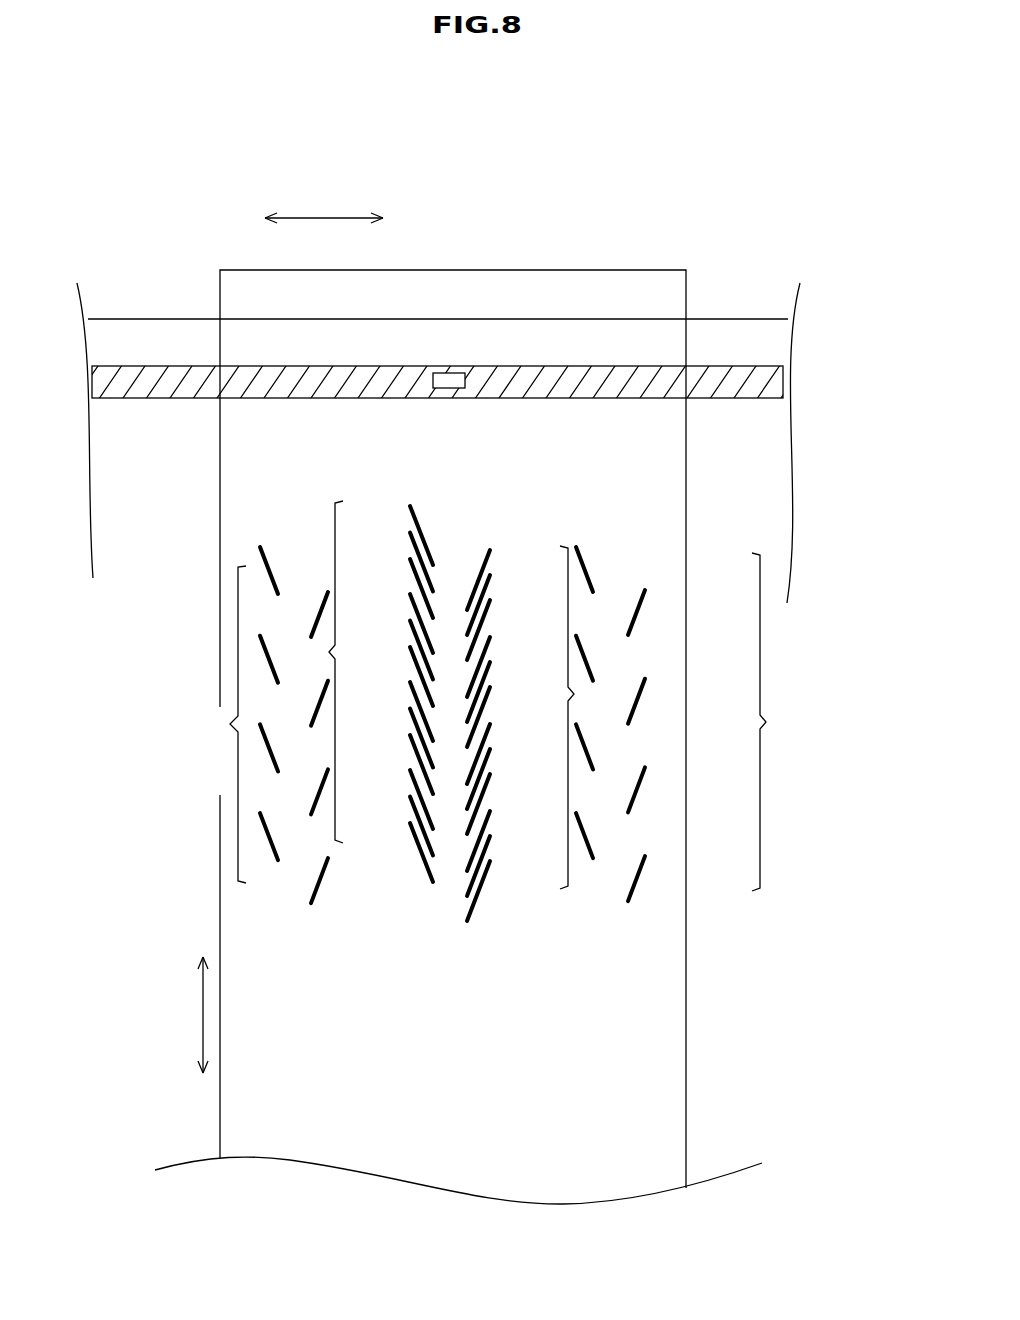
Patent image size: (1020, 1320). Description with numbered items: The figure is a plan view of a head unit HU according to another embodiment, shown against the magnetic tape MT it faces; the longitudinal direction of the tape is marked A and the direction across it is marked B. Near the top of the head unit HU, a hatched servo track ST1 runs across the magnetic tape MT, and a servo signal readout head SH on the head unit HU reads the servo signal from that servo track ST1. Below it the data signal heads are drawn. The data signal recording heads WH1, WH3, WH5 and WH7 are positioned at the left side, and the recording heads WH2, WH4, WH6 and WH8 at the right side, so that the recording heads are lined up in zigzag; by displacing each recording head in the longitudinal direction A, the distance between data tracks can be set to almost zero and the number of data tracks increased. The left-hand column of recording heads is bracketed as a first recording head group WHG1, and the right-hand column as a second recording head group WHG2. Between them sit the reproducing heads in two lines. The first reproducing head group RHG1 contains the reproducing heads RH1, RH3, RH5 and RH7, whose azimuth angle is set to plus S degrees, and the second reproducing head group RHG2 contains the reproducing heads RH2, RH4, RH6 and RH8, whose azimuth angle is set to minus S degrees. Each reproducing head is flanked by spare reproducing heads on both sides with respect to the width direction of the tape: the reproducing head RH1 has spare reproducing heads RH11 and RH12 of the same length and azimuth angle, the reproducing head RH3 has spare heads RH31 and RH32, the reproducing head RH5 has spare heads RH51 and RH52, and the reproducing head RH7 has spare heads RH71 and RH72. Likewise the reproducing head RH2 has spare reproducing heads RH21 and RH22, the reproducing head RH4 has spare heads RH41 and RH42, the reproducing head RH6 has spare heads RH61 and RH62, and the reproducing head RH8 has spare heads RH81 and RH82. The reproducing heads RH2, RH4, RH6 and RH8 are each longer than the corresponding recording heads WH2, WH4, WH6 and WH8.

The magnetic tape MT is at (751, 301).
The servo track ST1 is at (145, 383).
The servo signal readout head SH is at (455, 371).
The head unit HU is at (464, 264).
The longitudinal direction A is at (324, 207).
The tape running direction B is at (193, 1015).
The first write head group WHG1 is at (210, 725).
The second write head group WHG2 is at (700, 724).
The first reproducing head group RHG1 is at (356, 691).
The second reproducing head group RHG2 is at (544, 733).
The reproducing head RH1 is at (388, 562).
The spare reproducing head RH11 is at (410, 507).
The spare reproducing head RH12 is at (410, 560).
The reproducing head RH3 is at (388, 650).
The spare reproducing head RH31 is at (410, 595).
The spare reproducing head RH32 is at (410, 648).
The reproducing head RH5 is at (388, 738).
The spare reproducing head RH51 is at (410, 683).
The spare reproducing head RH52 is at (410, 736).
The reproducing head RH7 is at (388, 826).
The spare reproducing head RH71 is at (410, 771).
The spare reproducing head RH72 is at (410, 824).
The reproducing head RH2 is at (510, 603).
The spare reproducing head RH21 is at (490, 551).
The spare reproducing head RH22 is at (490, 601).
The reproducing head RH4 is at (510, 690).
The spare reproducing head RH41 is at (490, 638).
The spare reproducing head RH42 is at (490, 688).
The reproducing head RH6 is at (510, 777).
The spare reproducing head RH61 is at (490, 725).
The spare reproducing head RH62 is at (490, 775).
The reproducing head RH8 is at (510, 864).
The spare reproducing head RH81 is at (490, 812).
The spare reproducing head RH82 is at (490, 862).
The recording head WH1 is at (584, 565).
The recording head WH2 is at (637, 612).
The recording head WH3 is at (584, 654).
The recording head WH4 is at (637, 701).
The recording head WH5 is at (584, 742).
The recording head WH6 is at (637, 789).
The recording head WH7 is at (584, 831).
The recording head WH8 is at (637, 878).